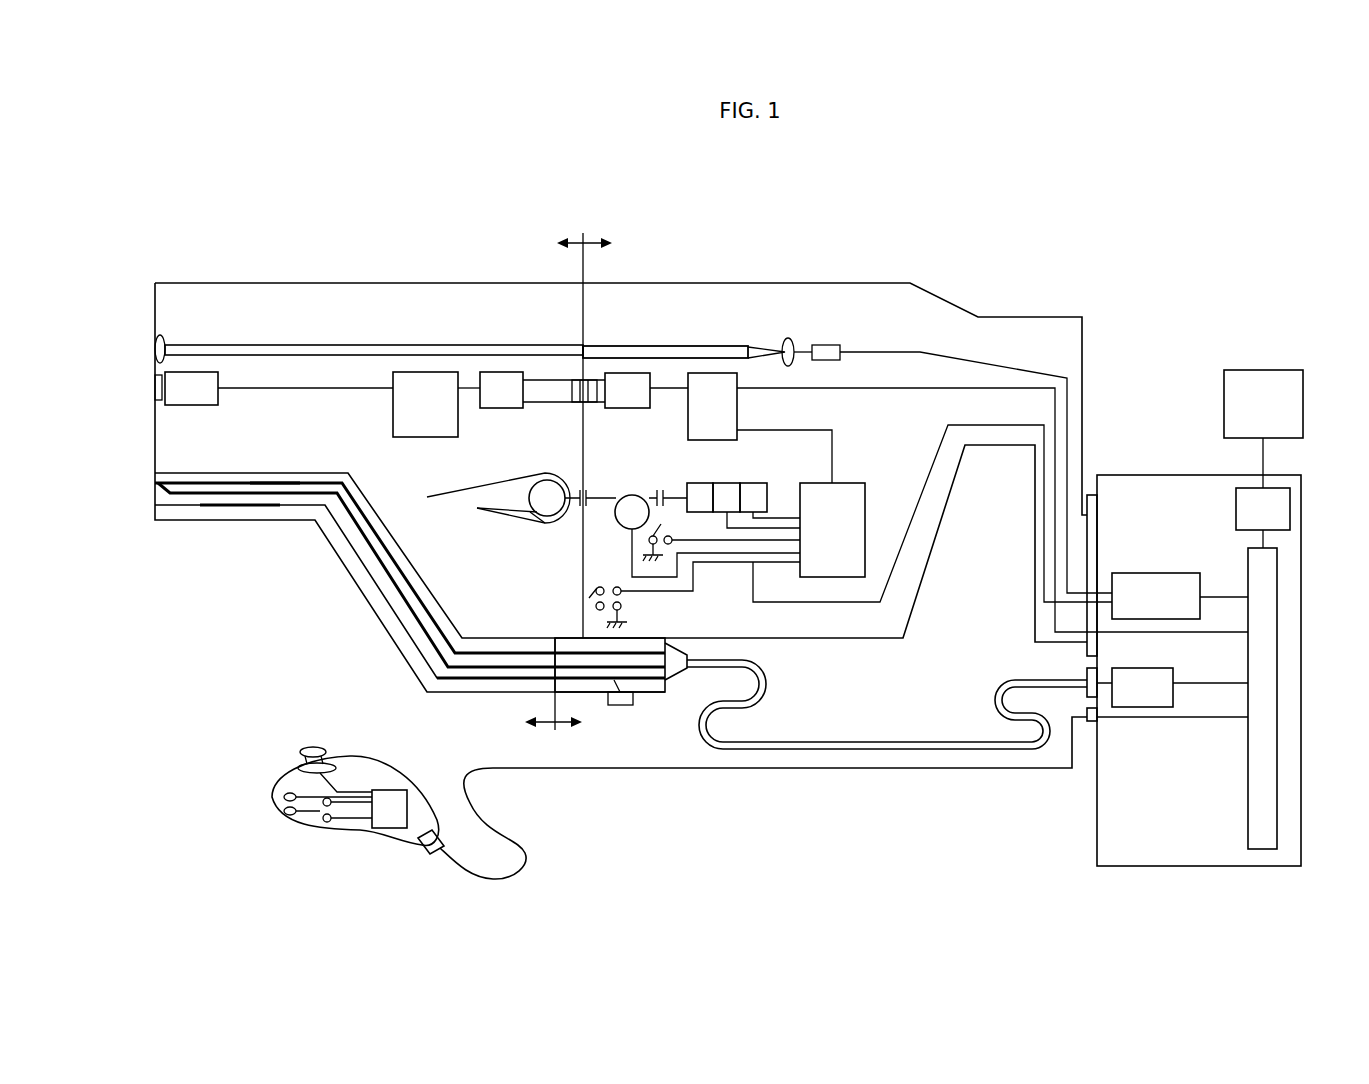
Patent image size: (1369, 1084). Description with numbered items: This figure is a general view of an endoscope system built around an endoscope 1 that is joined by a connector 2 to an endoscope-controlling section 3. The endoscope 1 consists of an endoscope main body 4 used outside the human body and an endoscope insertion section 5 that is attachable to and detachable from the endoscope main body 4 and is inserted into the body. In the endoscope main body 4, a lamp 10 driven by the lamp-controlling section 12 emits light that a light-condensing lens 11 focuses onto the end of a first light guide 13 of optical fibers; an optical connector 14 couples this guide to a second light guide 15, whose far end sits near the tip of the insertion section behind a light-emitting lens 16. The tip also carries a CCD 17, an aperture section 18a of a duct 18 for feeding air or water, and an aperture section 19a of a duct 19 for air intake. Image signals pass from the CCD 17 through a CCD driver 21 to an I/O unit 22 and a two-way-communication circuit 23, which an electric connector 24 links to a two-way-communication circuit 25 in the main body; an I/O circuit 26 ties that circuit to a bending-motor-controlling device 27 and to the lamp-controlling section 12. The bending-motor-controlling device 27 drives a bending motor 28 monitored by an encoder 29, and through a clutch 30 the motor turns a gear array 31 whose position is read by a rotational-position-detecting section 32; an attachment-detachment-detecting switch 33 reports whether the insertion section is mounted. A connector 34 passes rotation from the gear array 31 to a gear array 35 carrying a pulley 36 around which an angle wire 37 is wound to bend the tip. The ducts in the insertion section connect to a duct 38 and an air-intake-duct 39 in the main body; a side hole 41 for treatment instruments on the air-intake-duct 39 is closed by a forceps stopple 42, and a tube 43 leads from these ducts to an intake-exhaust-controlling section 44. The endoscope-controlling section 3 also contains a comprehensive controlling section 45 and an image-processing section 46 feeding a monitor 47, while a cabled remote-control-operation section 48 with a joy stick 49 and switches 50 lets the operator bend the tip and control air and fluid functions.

The endoscope 1 is at (937, 258).
The connector 2 is at (1092, 494).
The endoscope-controlling section 3 is at (1302, 519).
The endoscope main body 4 is at (799, 285).
The endoscope insertion section 5 is at (347, 285).
The lamp 10 is at (833, 346).
The light-condensing lens 11 is at (787, 336).
The lamp-controlling section 12 is at (1140, 572).
The first light guide 13 is at (675, 344).
The optical connector 14 is at (589, 343).
The second light guide 15 is at (437, 344).
The light-emitting lens 16 is at (160, 338).
The CCD 17 is at (154, 385).
The duct 18 is at (260, 485).
The aperture section 18a is at (157, 483).
The duct 19 is at (210, 521).
The aperture section 19a is at (157, 505).
The CCD driver 21 is at (204, 406).
The I/O unit 22 is at (427, 438).
The two-way-communication circuit 23 is at (500, 409).
The electric connector 24 is at (586, 403).
The two-way-communication circuit 25 is at (625, 409).
The I/O circuit 26 is at (738, 411).
The bending-motor-controlling device 27 is at (848, 489).
The bending motor 28 is at (725, 483).
The encoder 29 is at (750, 483).
The clutch 30 is at (660, 490).
The gear array 31 is at (584, 492).
The rotational-position-detecting section 32 is at (618, 518).
The attachment-detachment-detecting switch 33 is at (594, 585).
The connector 34 is at (545, 514).
The gear array 35 is at (432, 497).
The pulley 36 is at (530, 513).
The angle wire 37 is at (478, 511).
The duct 38 is at (640, 653).
The air-intake-duct 39 is at (657, 694).
The side hole 41 is at (612, 690).
The forceps stopple 42 is at (624, 706).
The tube 43 is at (826, 743).
The intake-exhaust-controlling section 44 is at (1152, 668).
The comprehensive controlling section 45 is at (1278, 650).
The image-processing section 46 is at (1291, 498).
The monitor 47 is at (1276, 370).
The remote-control-operation section 48 is at (395, 846).
The joy stick 49 is at (313, 747).
The switches 50 is at (272, 800).